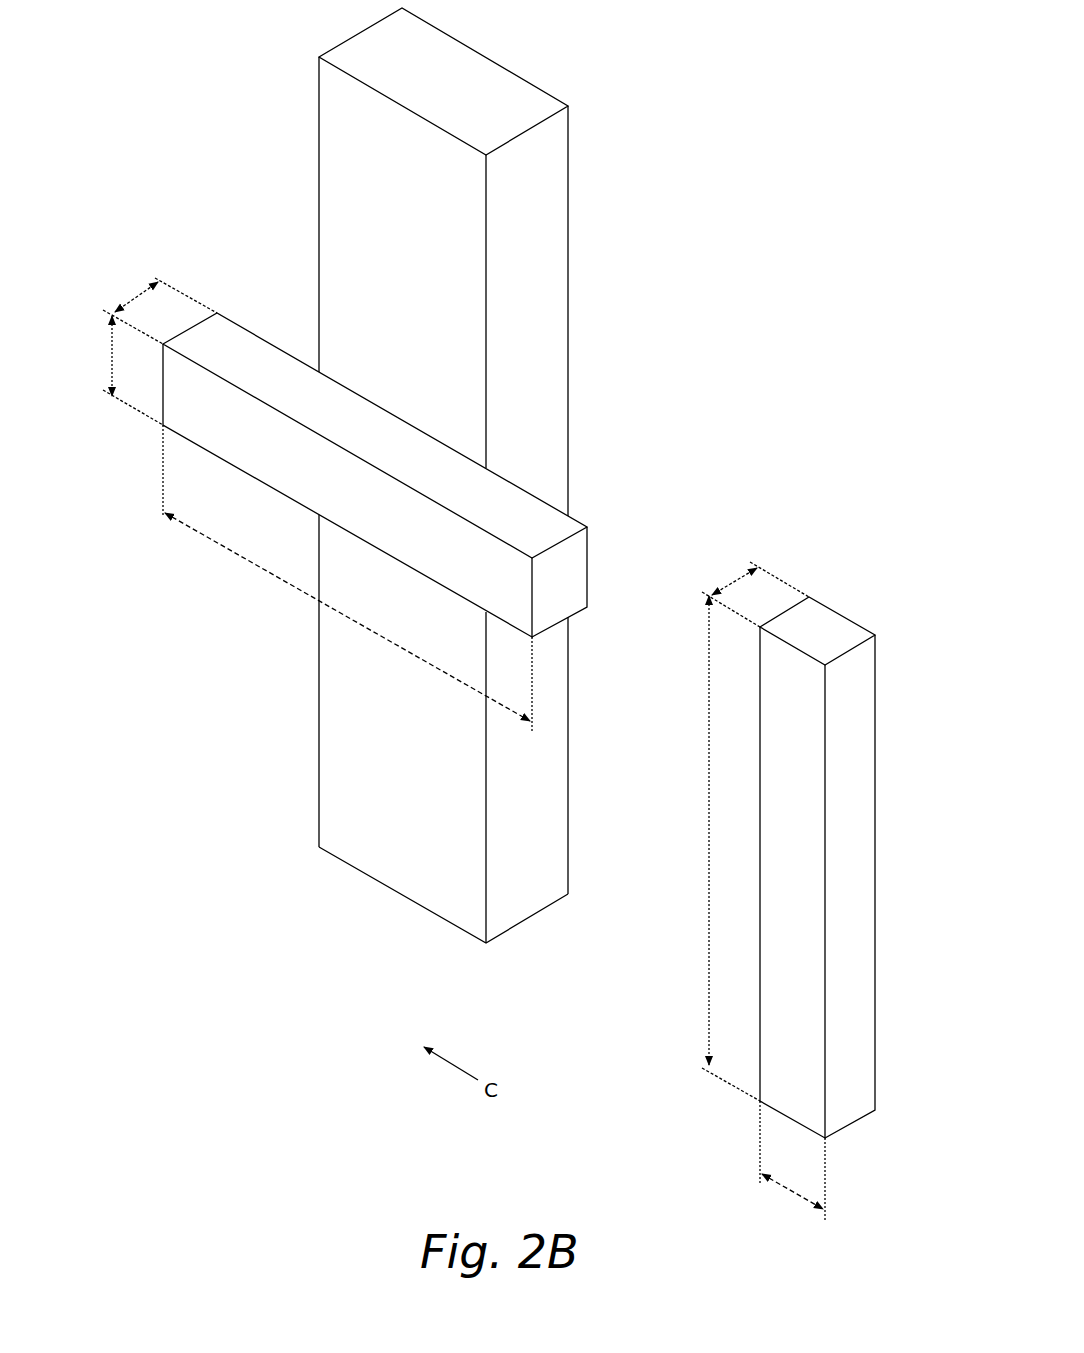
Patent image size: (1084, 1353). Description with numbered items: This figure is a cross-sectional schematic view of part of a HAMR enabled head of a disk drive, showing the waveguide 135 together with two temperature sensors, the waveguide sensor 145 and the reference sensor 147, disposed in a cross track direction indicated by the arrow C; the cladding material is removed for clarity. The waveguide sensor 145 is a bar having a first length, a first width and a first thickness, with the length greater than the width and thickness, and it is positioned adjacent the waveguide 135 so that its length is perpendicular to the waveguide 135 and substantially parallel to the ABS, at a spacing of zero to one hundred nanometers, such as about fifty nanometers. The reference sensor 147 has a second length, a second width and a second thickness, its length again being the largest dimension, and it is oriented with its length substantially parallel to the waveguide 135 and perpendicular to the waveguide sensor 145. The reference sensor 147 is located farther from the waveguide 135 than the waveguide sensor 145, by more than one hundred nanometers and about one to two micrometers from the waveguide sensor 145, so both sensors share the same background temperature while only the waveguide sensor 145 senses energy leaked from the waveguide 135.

The waveguide 135 is at (319, 180).
The waveguide sensor 145 is at (252, 340).
The reference sensor 147 is at (835, 623).